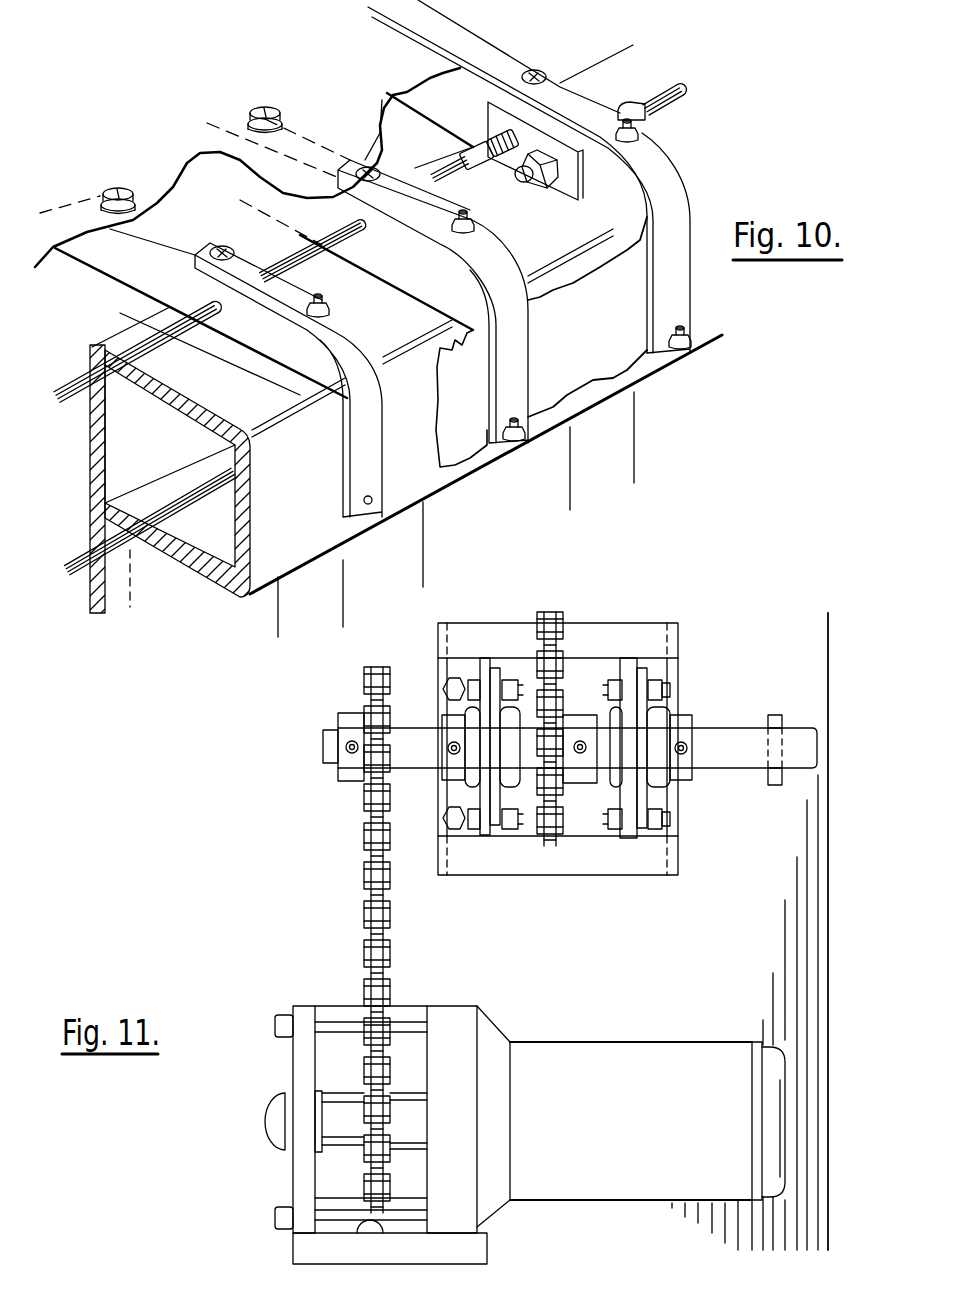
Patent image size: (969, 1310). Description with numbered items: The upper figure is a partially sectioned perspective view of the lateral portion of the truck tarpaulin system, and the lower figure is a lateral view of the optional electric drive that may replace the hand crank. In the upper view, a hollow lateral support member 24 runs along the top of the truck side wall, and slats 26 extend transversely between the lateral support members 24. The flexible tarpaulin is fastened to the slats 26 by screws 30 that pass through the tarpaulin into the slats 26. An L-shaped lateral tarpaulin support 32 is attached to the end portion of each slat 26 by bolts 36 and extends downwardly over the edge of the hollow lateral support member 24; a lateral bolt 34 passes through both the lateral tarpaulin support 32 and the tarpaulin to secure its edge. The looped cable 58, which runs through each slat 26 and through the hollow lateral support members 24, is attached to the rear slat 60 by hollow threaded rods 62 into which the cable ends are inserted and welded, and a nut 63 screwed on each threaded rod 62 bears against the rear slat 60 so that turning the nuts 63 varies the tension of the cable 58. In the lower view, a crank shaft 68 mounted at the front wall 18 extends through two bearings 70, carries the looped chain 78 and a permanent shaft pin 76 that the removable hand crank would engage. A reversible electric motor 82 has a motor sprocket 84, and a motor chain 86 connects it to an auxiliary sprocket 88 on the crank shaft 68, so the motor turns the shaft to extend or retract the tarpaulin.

In FIG. 11, the front wall 18 is at (828, 923).
In FIG. 10, the hollow lateral support member 24 is at (257, 600).
In FIG. 10, the slat 26 is at (273, 217).
In FIG. 10, the screw 30 is at (258, 104).
In FIG. 10, the L-shaped lateral tarpaulin support 32 is at (378, 520).
In FIG. 10, the lateral bolt 34 is at (513, 448).
In FIG. 10, the bolt 36 is at (456, 231).
In FIG. 10, the looped cable 58 is at (75, 400).
In FIG. 10, the rear slat 60 is at (472, 88).
In FIG. 10, the threaded rod 62 is at (483, 172).
In FIG. 10, the nut 63 is at (541, 186).
In FIG. 11, the crank shaft 68 is at (417, 727).
In FIG. 11, the bearing 70 is at (495, 668).
In FIG. 11, the shaft pin 76 is at (777, 787).
In FIG. 11, the looped chain 78 is at (562, 612).
In FIG. 11, the electric motor 82 is at (689, 1044).
In FIG. 11, the motor sprocket 84 is at (372, 1070).
In FIG. 11, the motor chain 86 is at (390, 930).
In FIG. 11, the auxiliary sprocket 88 is at (365, 697).